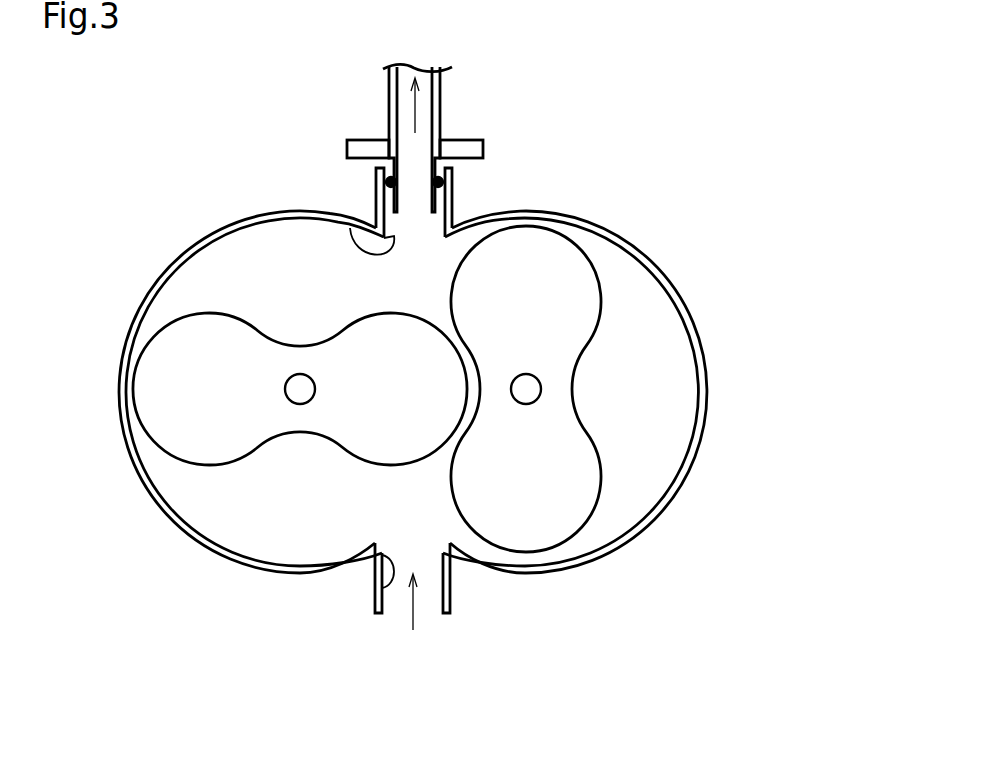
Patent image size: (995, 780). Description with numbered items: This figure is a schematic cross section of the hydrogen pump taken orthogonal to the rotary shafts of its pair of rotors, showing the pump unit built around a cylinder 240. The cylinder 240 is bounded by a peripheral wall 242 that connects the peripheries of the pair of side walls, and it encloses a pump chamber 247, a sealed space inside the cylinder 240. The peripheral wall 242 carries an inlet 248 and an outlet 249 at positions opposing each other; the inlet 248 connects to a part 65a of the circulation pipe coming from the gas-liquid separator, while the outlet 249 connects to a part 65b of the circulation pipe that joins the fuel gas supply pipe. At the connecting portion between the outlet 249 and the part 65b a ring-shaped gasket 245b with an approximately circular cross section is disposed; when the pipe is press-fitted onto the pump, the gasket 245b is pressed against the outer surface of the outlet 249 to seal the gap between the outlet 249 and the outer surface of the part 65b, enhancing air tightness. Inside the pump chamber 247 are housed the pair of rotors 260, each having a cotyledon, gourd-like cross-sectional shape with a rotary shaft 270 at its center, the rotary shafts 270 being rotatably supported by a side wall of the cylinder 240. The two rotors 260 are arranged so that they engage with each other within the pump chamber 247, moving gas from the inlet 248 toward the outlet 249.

The cylinder 240 is at (449, 390).
The peripheral wall 242 is at (158, 273).
The gasket 245b is at (386, 185).
The pump chamber 247 is at (317, 519).
The inlet 248 is at (387, 578).
The outlet 249 is at (350, 228).
The rotors 260 is at (220, 465).
The rotary shaft 270 is at (285, 385).
The part of the circulation pipe 65a is at (413, 624).
The part of the circulation pipe 65b is at (389, 105).